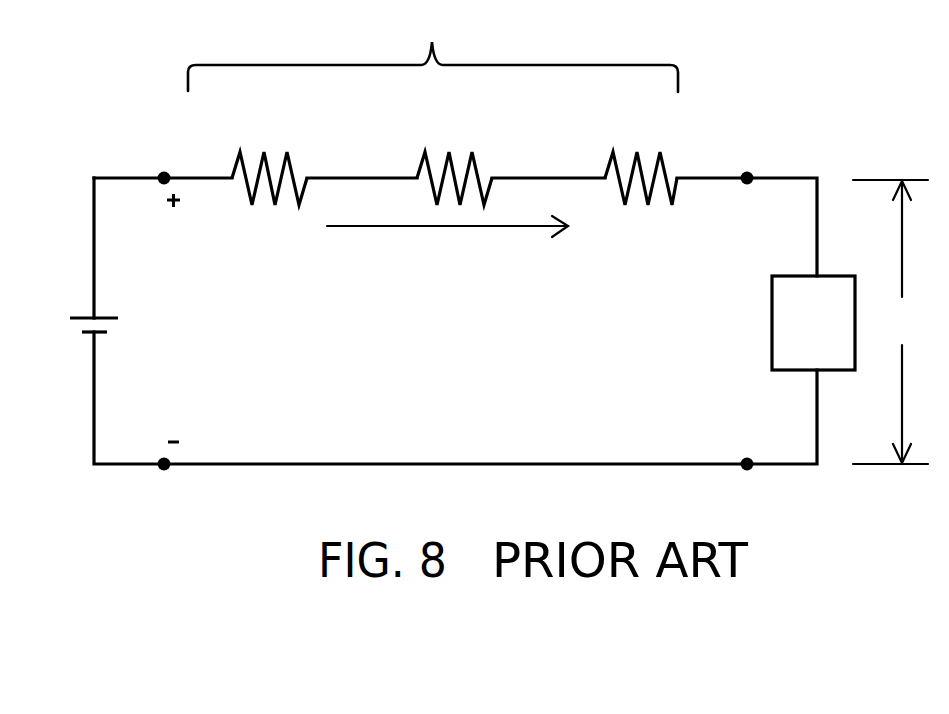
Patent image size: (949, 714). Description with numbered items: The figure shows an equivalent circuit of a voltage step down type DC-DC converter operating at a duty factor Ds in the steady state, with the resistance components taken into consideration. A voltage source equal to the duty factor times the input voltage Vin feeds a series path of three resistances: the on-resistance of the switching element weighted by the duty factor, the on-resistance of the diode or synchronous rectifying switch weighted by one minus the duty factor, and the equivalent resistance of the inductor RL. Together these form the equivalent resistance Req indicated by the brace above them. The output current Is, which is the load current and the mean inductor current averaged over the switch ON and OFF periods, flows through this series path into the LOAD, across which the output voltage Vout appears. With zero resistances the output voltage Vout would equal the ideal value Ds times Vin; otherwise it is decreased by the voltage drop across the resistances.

The input voltage Vin is at (143, 327).
The equivalent resistance of the inductor RL is at (641, 155).
The equivalent resistance Req is at (433, 46).
The output current Is is at (447, 241).
The load LOAD is at (813, 323).
The output voltage Vout is at (892, 322).